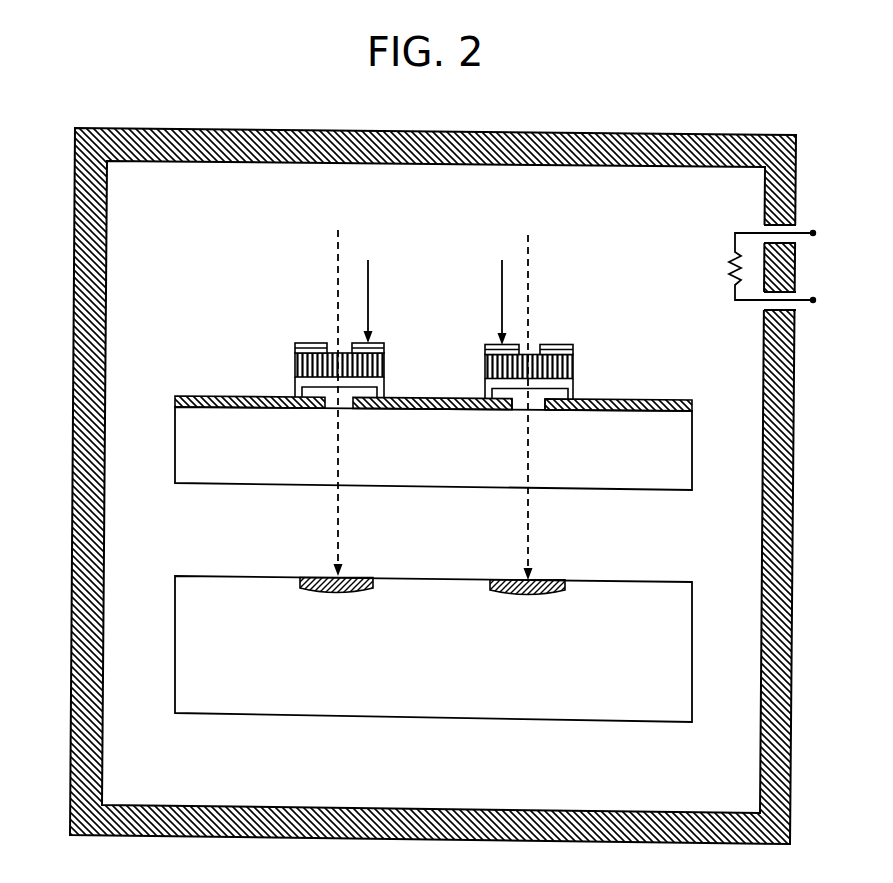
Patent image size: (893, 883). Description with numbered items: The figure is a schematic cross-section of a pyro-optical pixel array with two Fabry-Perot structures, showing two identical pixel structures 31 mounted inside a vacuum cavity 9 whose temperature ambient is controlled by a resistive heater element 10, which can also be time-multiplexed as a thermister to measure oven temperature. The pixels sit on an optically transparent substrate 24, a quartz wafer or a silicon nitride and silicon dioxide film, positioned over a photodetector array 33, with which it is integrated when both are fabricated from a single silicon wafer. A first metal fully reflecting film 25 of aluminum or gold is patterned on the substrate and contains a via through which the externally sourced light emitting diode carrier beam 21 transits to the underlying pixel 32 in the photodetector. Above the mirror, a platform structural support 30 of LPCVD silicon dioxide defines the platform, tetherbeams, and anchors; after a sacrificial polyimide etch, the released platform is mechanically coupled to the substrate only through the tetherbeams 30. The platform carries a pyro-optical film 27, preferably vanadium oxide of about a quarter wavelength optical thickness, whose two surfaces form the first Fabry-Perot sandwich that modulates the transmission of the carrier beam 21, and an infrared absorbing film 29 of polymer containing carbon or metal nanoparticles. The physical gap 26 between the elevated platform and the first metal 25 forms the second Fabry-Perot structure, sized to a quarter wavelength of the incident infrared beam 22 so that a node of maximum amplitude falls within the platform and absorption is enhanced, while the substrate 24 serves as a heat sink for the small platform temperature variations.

The vacuum cavity 9 is at (710, 135).
The resistive heater element 10 is at (731, 270).
The optical carrier beam 21 is at (434, 391).
The infrared beam 22 is at (435, 289).
The optically transparent substrate 24 is at (622, 489).
The first metal reflecting film 25 is at (235, 395).
The gap 26 is at (522, 406).
The pyro-optical film 27 is at (297, 357).
The infrared absorbing film 29 is at (547, 345).
The platform structural support 30 is at (575, 396).
The pixel structure 31 is at (294, 370).
The pixel in the photodetector 32 is at (325, 596).
The photodetector array 33 is at (565, 722).